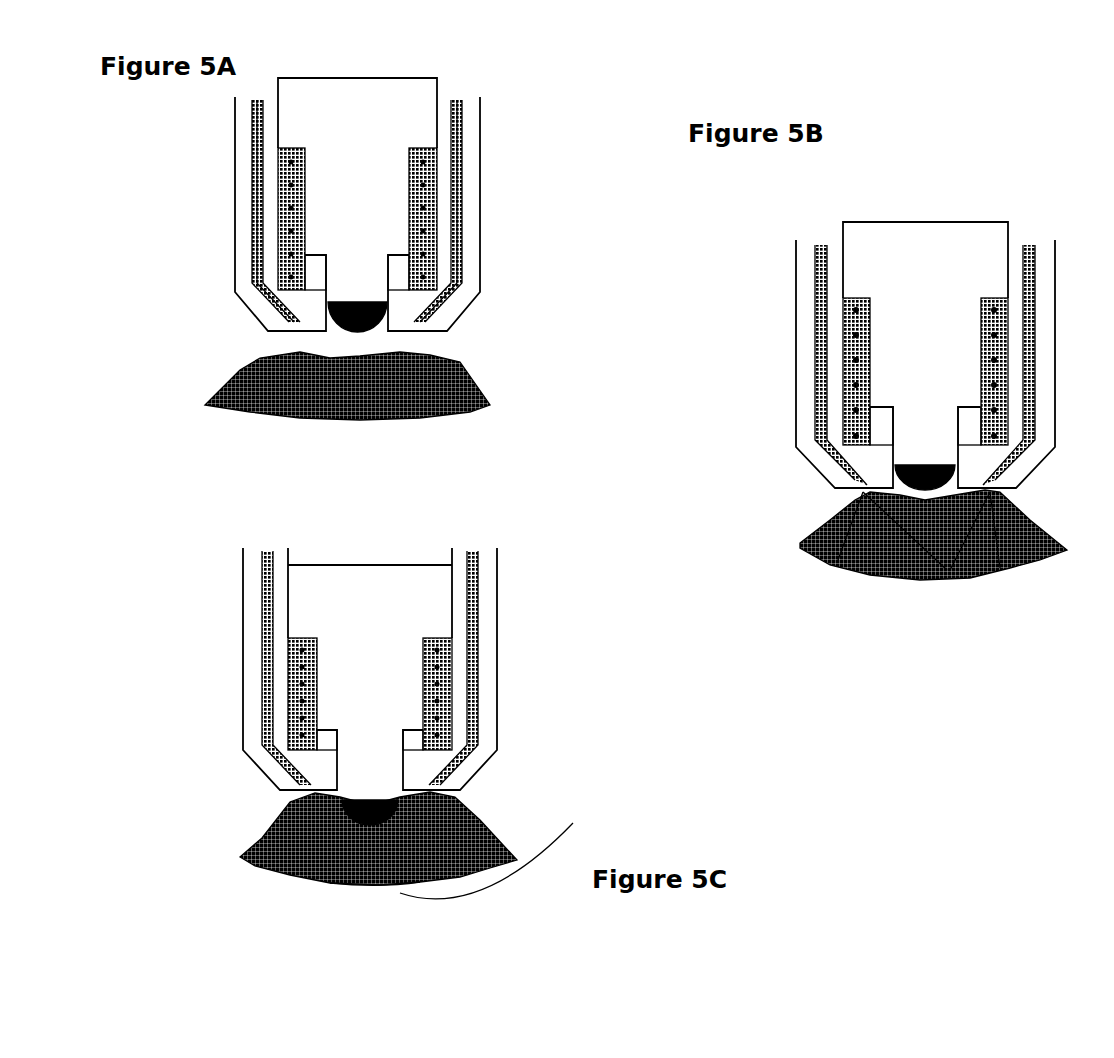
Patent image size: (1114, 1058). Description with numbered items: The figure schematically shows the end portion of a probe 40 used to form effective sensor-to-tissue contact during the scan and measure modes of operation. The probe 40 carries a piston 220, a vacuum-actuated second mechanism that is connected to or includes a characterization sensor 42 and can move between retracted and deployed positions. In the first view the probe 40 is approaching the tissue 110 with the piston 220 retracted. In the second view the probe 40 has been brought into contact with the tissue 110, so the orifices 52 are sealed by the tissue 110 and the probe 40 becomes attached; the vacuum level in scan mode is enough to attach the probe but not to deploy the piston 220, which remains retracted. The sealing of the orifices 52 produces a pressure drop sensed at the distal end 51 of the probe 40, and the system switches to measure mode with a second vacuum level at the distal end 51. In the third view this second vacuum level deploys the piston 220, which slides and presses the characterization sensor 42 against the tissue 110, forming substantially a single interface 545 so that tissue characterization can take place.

In FIG. 5A, the probe 40 is at (218, 201).
In FIG. 5B, the probe 40 is at (770, 378).
In FIG. 5C, the probe 40 is at (228, 652).
In FIG. 5A, the characterization sensor 42 is at (357, 300).
In FIG. 5B, the characterization sensor 42 is at (925, 465).
In FIG. 5C, the characterization sensor 42 is at (370, 798).
In FIG. 5A, the distal end 51 is at (229, 343).
In FIG. 5B, the distal end 51 is at (827, 498).
In FIG. 5C, the distal end 51 is at (265, 797).
In FIG. 5A, the orifices 52 is at (313, 347).
In FIG. 5B, the orifices 52 is at (1000, 562).
In FIG. 5C, the orifices 52 is at (400, 793).
In FIG. 5A, the tissue 110 is at (245, 416).
In FIG. 5B, the tissue 110 is at (815, 565).
In FIG. 5C, the tissue 110 is at (273, 878).
In FIG. 5A, the piston 220 is at (357, 113).
In FIG. 5B, the piston 220 is at (925, 260).
In FIG. 5C, the piston 220 is at (370, 593).
In FIG. 5C, the single interface 545 is at (372, 885).